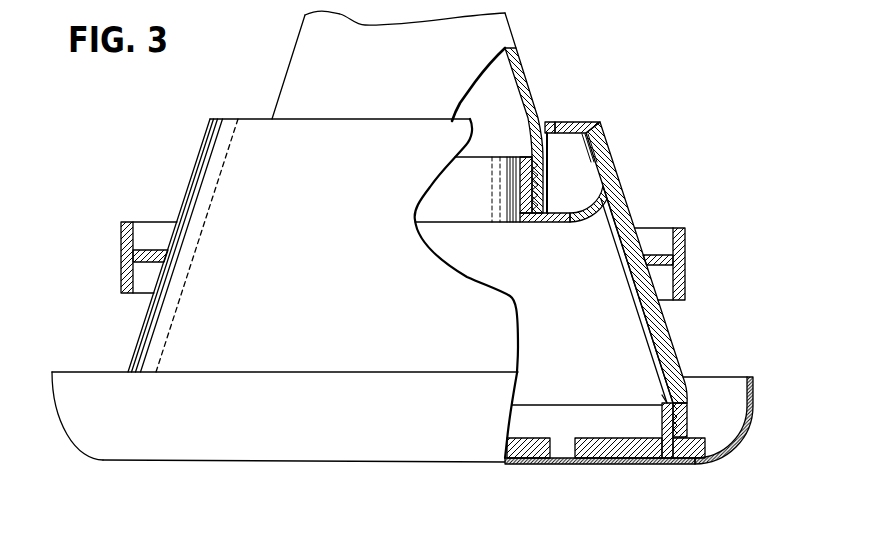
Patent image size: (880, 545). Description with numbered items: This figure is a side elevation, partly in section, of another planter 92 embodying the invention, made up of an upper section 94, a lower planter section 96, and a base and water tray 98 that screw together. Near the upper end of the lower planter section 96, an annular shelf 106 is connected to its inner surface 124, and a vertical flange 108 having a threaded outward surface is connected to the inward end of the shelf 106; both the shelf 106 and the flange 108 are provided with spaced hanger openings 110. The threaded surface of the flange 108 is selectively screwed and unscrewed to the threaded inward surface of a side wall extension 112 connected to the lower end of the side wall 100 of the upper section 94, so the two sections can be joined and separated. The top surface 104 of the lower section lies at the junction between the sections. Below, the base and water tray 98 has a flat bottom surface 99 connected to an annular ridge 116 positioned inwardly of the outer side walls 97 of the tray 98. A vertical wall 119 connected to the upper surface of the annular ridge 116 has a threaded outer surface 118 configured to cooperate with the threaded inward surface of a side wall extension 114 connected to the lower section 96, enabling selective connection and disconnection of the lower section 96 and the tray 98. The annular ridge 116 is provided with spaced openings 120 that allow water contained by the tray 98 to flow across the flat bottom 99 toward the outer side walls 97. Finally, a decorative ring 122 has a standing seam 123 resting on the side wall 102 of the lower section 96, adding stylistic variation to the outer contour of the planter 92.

The planter 92 is at (235, 84).
The upper section 94 is at (426, 58).
The lower planter section 96 is at (392, 287).
The outer side walls 97 is at (759, 392).
The base and water tray 98 is at (715, 397).
The flat bottom surface 99 is at (598, 465).
The side wall 100 is at (532, 92).
The side wall 102 is at (661, 152).
The top surface 104 is at (340, 124).
The annular shelf 106 is at (525, 222).
The vertical flange 108 is at (533, 200).
The hanger openings 110 is at (447, 215).
The side wall extension 112 is at (546, 180).
The side wall extension 114 is at (685, 423).
The annular ridge 116 is at (665, 456).
The threaded outer surface 118 is at (678, 462).
The vertical wall 119 is at (667, 391).
The spaced openings 120 is at (563, 453).
The decorative ring 122 is at (737, 250).
The standing seam 123 is at (150, 250).
The inner surface 124 is at (638, 281).